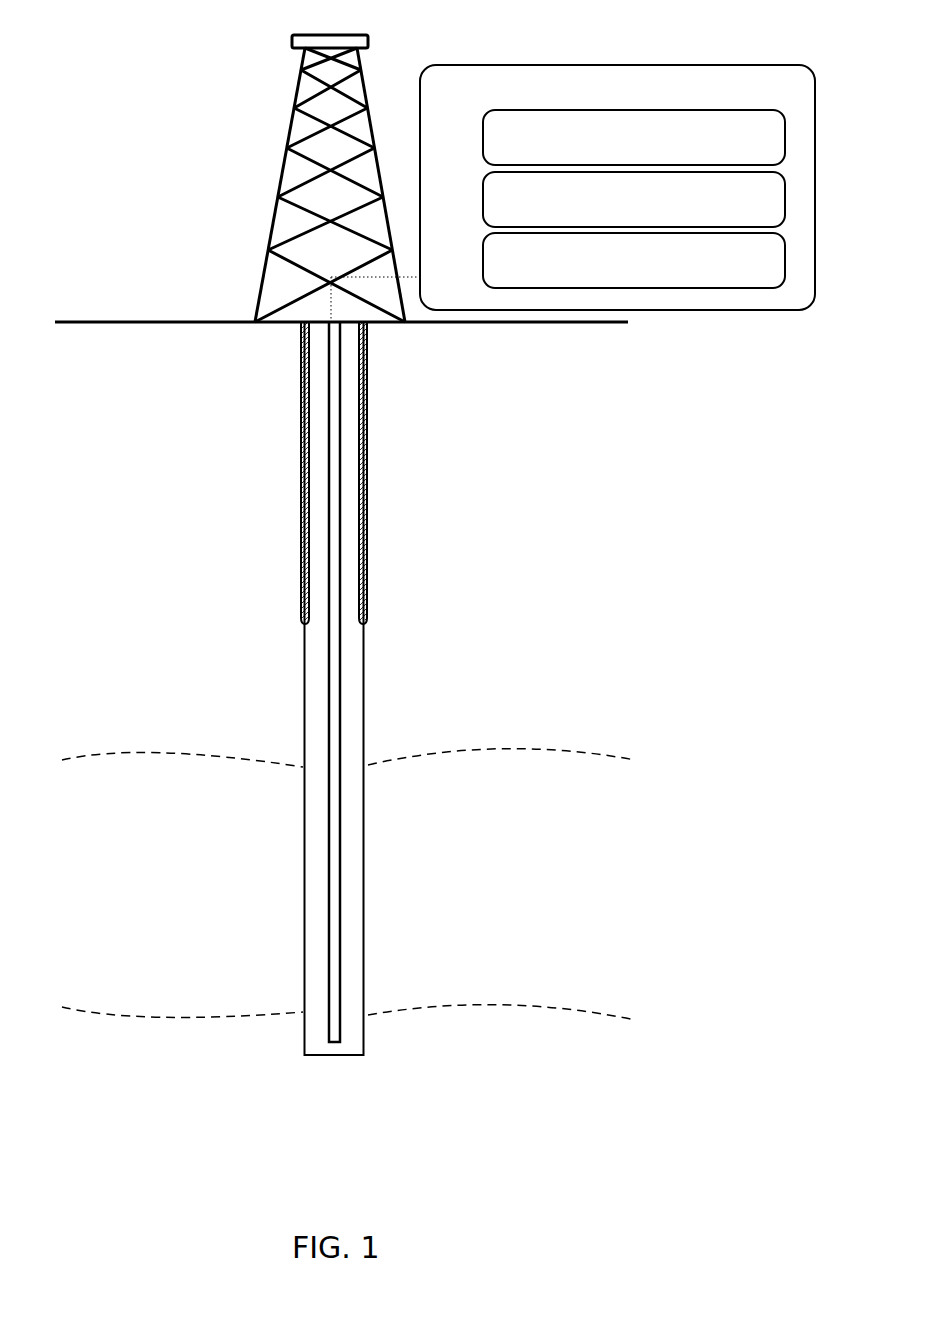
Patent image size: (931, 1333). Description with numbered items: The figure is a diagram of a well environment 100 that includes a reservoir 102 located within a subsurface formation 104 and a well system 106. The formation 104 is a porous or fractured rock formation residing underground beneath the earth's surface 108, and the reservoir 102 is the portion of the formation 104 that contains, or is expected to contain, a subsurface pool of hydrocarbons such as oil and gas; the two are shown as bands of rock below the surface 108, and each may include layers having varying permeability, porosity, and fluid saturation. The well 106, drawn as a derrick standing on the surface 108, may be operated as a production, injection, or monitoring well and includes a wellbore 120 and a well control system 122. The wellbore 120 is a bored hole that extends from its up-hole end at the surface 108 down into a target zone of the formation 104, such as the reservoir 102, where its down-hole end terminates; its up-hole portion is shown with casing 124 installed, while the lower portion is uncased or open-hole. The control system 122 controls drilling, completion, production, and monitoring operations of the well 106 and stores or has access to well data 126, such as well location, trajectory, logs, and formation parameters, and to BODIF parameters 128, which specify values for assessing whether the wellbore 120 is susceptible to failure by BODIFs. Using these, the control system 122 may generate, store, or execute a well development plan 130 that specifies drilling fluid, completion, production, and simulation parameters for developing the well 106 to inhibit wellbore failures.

The well environment 100 is at (490, 30).
The reservoir 102 is at (510, 857).
The subsurface formation 104 is at (496, 527).
The well system 106 is at (226, 263).
The surface 108 is at (549, 330).
The wellbore 120 is at (358, 1080).
The well control system 122 is at (468, 122).
The casing 124 is at (378, 381).
The well data 126 is at (615, 162).
The BODIF parameters 128 is at (615, 222).
The well development plan 130 is at (615, 282).